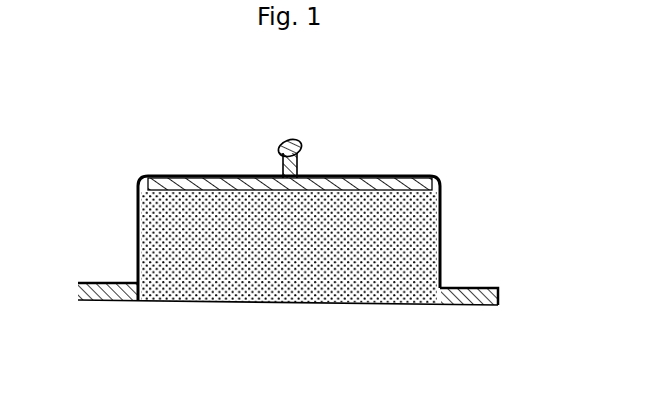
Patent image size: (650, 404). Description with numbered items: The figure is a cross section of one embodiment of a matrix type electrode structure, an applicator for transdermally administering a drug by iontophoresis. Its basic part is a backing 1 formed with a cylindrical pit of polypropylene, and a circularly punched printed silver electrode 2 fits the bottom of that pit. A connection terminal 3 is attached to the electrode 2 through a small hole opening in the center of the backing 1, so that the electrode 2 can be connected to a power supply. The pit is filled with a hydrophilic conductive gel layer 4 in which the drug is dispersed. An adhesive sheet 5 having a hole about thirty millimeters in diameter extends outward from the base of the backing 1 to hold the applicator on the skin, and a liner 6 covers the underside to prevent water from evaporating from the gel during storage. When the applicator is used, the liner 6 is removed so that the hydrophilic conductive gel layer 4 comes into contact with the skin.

The backing 1 is at (438, 183).
The printed silver electrode 2 is at (157, 177).
The connection terminal 3 is at (303, 147).
The hydrophilic conductive gel layer 4 is at (152, 234).
The adhesive sheet 5 is at (497, 302).
The liner 6 is at (377, 305).